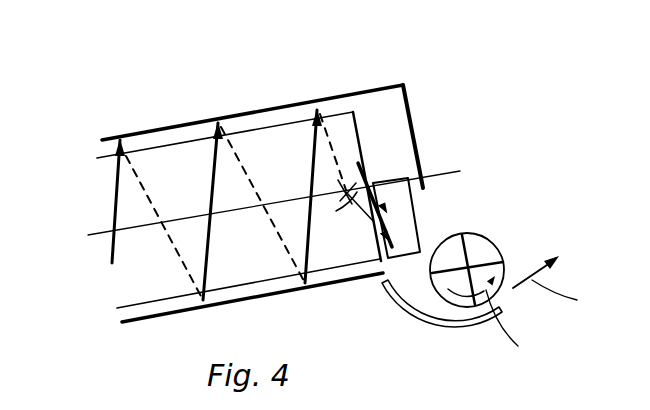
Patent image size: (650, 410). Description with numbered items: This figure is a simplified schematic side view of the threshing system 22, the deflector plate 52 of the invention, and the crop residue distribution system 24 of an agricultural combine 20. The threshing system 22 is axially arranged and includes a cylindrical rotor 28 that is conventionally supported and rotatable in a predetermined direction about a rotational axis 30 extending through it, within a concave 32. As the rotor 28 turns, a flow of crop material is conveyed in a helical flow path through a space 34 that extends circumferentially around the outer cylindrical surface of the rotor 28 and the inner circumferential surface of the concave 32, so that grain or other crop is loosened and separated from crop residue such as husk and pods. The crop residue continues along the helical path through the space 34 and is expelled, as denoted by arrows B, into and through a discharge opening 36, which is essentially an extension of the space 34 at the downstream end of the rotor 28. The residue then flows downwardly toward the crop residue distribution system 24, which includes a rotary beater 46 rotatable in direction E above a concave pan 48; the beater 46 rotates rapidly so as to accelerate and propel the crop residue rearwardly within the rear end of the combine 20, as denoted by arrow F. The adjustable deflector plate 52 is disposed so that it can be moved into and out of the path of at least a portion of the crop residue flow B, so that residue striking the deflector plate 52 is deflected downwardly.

The agricultural combine 20 is at (518, 53).
The threshing system 22 is at (414, 72).
The crop residue distribution system 24 is at (518, 249).
The cylindrical rotor 28 is at (353, 112).
The rotational axis 30 is at (88, 235).
The concave 32 is at (153, 128).
The space 34 is at (263, 118).
The discharge opening 36 is at (390, 152).
The beater 46 is at (495, 243).
The concave pan 48 is at (460, 328).
The adjustable deflector plate 52 is at (422, 205).